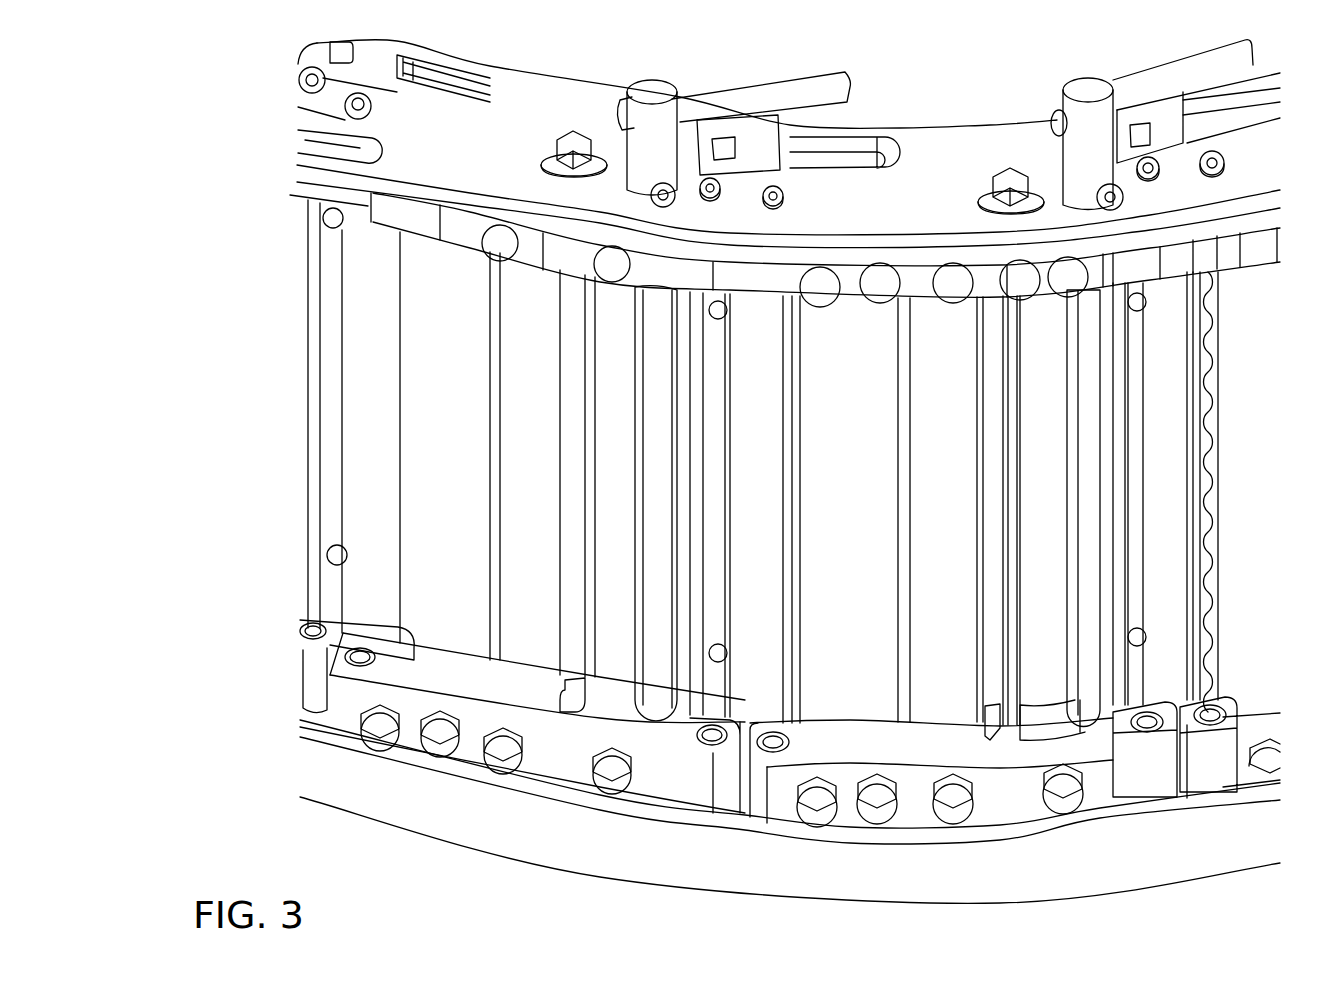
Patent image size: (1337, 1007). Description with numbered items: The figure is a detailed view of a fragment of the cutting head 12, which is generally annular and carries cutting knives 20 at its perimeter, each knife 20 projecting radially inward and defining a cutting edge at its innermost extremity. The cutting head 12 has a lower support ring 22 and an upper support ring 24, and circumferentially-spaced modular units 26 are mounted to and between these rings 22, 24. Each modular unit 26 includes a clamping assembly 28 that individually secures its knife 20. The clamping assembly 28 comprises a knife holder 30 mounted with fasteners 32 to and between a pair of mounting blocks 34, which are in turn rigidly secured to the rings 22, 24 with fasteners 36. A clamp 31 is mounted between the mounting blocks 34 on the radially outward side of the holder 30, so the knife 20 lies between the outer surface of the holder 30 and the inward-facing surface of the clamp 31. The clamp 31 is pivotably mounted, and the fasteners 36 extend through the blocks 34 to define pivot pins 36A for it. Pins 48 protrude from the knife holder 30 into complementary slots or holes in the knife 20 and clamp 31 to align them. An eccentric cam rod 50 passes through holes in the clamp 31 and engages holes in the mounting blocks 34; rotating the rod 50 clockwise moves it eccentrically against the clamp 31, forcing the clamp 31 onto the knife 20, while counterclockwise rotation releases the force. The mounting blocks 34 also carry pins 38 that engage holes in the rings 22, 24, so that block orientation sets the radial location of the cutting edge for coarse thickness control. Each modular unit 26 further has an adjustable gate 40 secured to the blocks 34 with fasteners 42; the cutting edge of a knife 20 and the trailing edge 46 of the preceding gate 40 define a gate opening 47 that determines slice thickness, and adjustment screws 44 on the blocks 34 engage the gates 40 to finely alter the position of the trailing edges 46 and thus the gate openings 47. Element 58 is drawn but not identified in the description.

The cutting head 12 is at (141, 178).
The cutting knife 20 is at (797, 625).
The lower support ring 22 is at (1210, 862).
The upper support ring 24 is at (962, 150).
The modular unit 26 is at (725, 190).
The clamping assembly 28 is at (796, 490).
The knife holder 30 is at (765, 713).
The clamp 31 is at (770, 397).
The fastener 32 is at (612, 778).
The mounting block 34 is at (537, 775).
The fastener 36 is at (577, 140).
The pivot pin 36A is at (585, 282).
The pin 38 is at (345, 660).
The adjustable gate 40 is at (410, 332).
The fastener 42 is at (880, 282).
The adjustment screw 44 is at (375, 733).
The trailing edge 46 is at (400, 445).
The gate opening 47 is at (795, 432).
The pin 48 is at (333, 222).
The eccentric cam rod 50 is at (652, 565).
The pin 58 is at (778, 97).